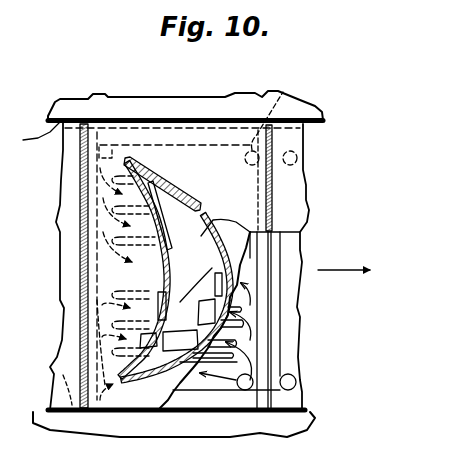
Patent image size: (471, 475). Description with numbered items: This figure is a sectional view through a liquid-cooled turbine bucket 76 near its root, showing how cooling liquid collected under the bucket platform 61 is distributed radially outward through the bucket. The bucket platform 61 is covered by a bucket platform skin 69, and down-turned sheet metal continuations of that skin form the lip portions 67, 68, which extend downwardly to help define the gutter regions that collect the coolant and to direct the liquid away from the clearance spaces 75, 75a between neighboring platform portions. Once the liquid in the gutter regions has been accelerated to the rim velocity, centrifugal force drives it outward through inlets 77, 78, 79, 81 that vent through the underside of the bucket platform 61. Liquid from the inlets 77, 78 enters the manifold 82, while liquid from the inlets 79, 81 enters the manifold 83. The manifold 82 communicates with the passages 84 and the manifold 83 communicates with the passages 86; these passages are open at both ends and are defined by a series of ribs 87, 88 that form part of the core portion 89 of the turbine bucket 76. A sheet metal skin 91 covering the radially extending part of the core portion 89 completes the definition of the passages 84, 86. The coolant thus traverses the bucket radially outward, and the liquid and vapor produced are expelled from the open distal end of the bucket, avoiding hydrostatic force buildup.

The bucket platform 61 is at (60, 238).
The lip portion 67 is at (52, 367).
The lip portion 68 is at (216, 118).
The bucket platform skin 69 is at (62, 318).
The clearance space 75 is at (50, 409).
The clearance space 75a is at (30, 139).
The turbine bucket 76 is at (154, 162).
The inlet 77 is at (110, 412).
The inlet 78 is at (105, 145).
The inlet 79 is at (278, 111).
The inlet 81 is at (246, 390).
The manifold 82 is at (92, 262).
The manifold 83 is at (250, 280).
The passage 84 is at (173, 267).
The passage 86 is at (215, 236).
The rib 87 is at (150, 262).
The rib 88 is at (210, 208).
The core portion 89 is at (177, 212).
The sheet metal skin 91 is at (302, 214).